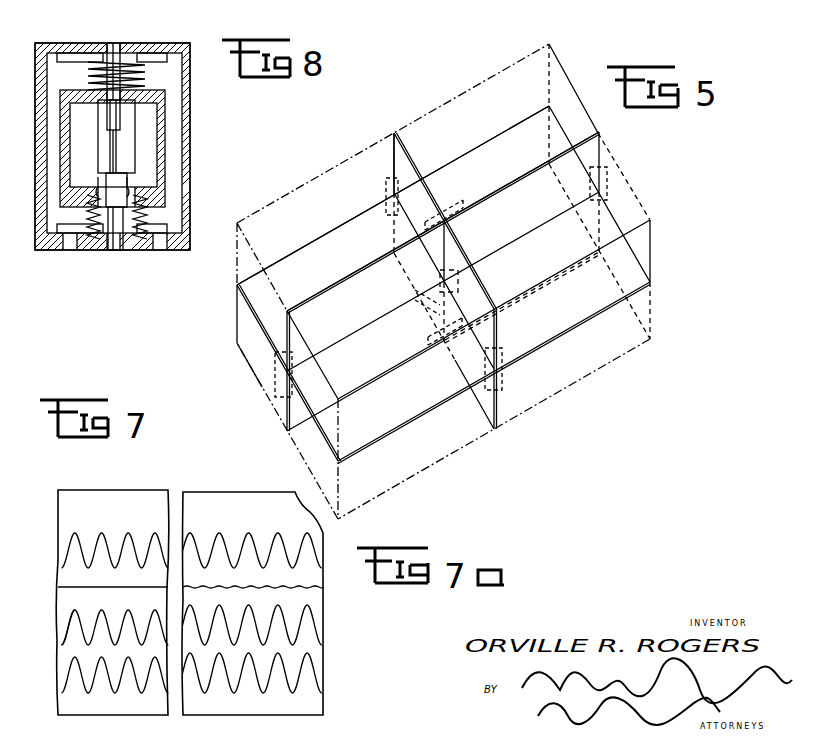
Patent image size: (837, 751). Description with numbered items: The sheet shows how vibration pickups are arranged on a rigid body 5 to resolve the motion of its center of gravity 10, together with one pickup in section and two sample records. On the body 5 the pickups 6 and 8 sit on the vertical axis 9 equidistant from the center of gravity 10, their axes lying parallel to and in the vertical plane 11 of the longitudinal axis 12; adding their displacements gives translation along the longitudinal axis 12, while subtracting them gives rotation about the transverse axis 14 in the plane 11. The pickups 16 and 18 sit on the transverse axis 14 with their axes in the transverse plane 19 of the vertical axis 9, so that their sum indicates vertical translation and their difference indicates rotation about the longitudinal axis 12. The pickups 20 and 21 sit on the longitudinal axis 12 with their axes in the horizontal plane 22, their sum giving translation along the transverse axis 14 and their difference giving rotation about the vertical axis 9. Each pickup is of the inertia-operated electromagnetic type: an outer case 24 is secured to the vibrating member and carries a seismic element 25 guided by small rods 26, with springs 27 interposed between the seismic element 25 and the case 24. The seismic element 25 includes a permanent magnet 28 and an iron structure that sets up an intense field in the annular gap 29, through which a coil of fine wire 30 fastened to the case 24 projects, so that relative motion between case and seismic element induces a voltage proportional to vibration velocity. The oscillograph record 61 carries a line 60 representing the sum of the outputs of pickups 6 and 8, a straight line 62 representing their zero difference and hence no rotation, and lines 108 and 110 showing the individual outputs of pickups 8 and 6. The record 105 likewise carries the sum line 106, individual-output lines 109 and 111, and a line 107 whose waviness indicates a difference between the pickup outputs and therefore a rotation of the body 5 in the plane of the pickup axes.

In FIG. 5, the rigid body 5 is at (600, 366).
In FIG. 8, the pickup 6 is at (82, 23).
In FIG. 5, the pickup 6 is at (450, 212).
In FIG. 5, the pickup 8 is at (441, 355).
In FIG. 5, the vertical axis 9 is at (460, 256).
In FIG. 5, the center of gravity 10 is at (447, 316).
In FIG. 5, the vertical plane 11 is at (338, 296).
In FIG. 5, the longitudinal axis 12 is at (357, 334).
In FIG. 5, the transverse axis 14 is at (425, 292).
In FIG. 5, the pickup 16 is at (386, 181).
In FIG. 5, the pickup 18 is at (501, 378).
In FIG. 5, the transverse plane 19 is at (425, 202).
In FIG. 5, the pickup 20 is at (273, 383).
In FIG. 5, the pickup 21 is at (608, 196).
In FIG. 5, the horizontal plane 22 is at (306, 250).
In FIG. 8, the outer case 24 is at (188, 108).
In FIG. 8, the seismic element 25 is at (128, 124).
In FIG. 8, the small rods 26 is at (118, 43).
In FIG. 8, the springs 27 is at (133, 73).
In FIG. 8, the permanent magnet 28 is at (126, 151).
In FIG. 8, the annular gap 29 is at (100, 188).
In FIG. 8, the coil of fine wire 30 is at (130, 188).
In FIG. 7, the line 60 is at (76, 542).
In FIG. 7, the oscillograph record 61 is at (66, 514).
In FIG. 7, the line 62 is at (90, 592).
In FIG. 7A, the oscillograph record 105 is at (205, 498).
In FIG. 7A, the line 106 is at (222, 542).
In FIG. 7A, the line 107 is at (296, 584).
In FIG. 7, the line 108 is at (64, 631).
In FIG. 7A, the line 109 is at (318, 618).
In FIG. 7, the line 110 is at (64, 670).
In FIG. 7A, the line 111 is at (318, 660).